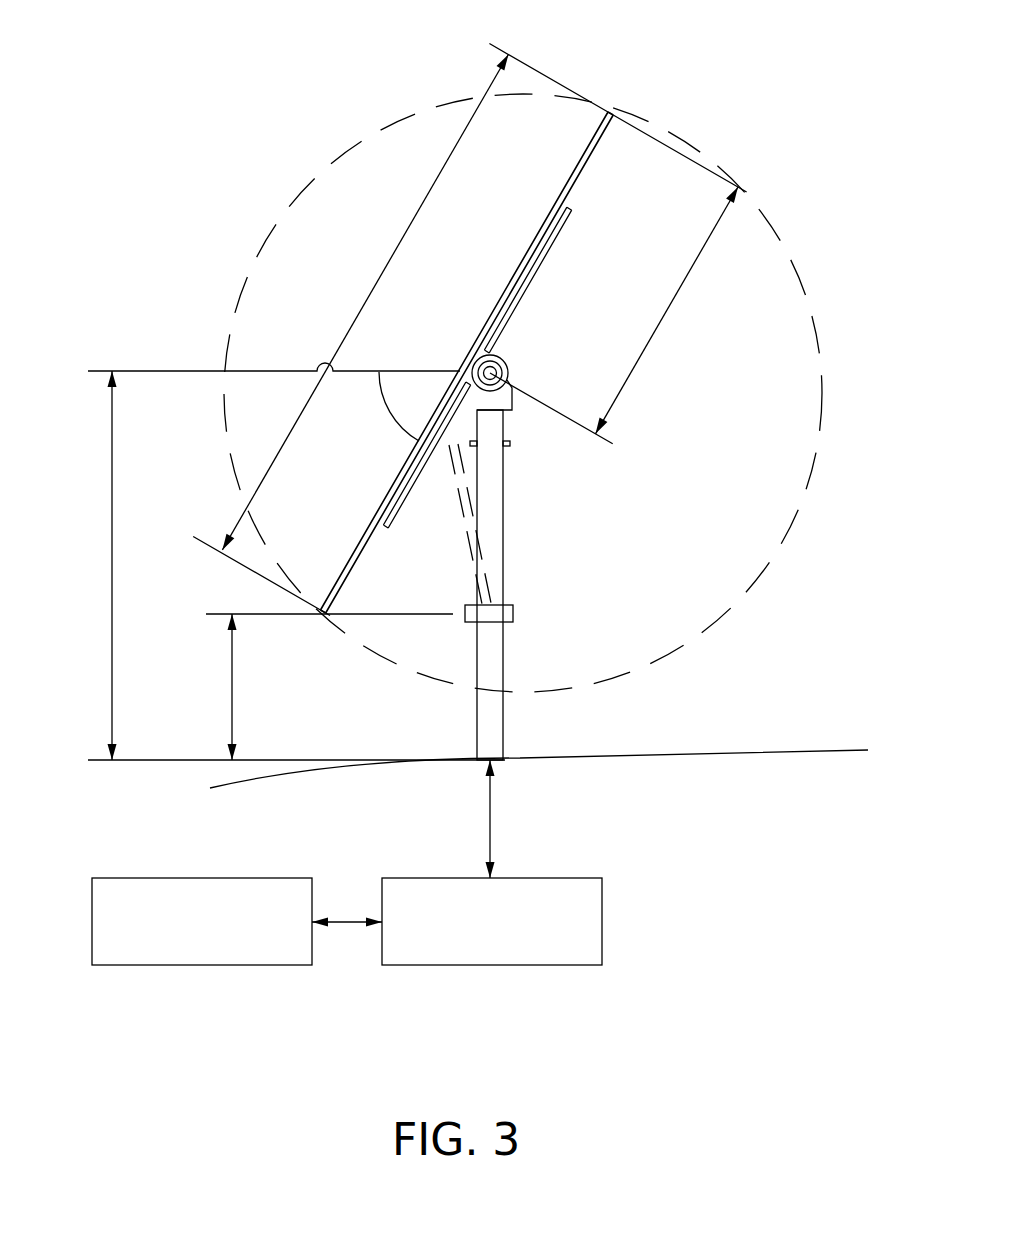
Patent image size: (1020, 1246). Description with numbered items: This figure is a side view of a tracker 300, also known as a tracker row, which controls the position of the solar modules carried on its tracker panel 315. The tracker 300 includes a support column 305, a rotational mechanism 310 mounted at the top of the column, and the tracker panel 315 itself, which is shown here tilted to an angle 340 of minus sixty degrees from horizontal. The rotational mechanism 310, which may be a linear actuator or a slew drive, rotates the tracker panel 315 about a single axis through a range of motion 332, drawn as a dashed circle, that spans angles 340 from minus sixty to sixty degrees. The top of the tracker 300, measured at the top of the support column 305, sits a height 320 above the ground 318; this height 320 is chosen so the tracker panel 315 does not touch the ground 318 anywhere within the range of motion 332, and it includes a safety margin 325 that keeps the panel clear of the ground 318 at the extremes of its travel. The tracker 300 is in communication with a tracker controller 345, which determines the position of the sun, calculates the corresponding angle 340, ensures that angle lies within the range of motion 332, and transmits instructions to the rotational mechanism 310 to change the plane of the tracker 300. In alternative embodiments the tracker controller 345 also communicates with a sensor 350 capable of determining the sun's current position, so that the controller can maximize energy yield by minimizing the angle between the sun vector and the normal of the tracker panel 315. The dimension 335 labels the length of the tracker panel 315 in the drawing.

The tracker 300 is at (598, 45).
The support column 305 is at (505, 655).
The rotational mechanism 310 is at (507, 366).
The tracker panel 315 is at (556, 239).
The ground 318 is at (718, 752).
The height 320 is at (110, 604).
The safety margin 325 is at (230, 690).
The range of motion 332 is at (335, 162).
The panel length 335 is at (382, 268).
The angle 340 is at (388, 414).
The tracker controller 345 is at (560, 878).
The sensor 350 is at (202, 921).